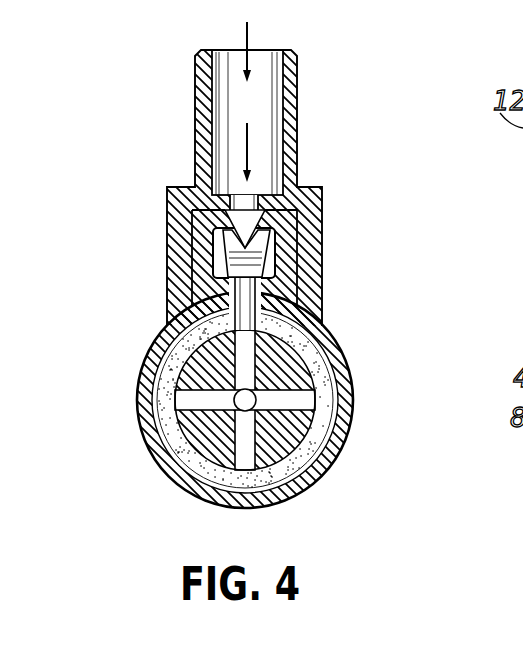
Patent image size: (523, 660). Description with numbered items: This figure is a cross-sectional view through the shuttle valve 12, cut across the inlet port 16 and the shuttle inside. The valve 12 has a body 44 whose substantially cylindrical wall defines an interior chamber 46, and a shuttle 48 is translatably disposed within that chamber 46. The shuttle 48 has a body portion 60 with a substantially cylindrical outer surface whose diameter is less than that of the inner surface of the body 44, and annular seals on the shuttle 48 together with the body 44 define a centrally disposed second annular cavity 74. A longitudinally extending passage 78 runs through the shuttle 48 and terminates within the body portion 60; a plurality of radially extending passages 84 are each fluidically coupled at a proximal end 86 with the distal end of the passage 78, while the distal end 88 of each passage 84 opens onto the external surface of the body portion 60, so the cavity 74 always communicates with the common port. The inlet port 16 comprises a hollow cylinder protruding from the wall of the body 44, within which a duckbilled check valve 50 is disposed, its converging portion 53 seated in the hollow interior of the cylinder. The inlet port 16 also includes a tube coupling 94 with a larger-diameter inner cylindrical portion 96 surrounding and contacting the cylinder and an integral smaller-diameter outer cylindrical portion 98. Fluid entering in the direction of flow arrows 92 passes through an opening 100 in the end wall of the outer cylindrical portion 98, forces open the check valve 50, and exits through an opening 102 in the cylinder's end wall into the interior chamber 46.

The shuttle valve 12 is at (90, 97).
The inlet port 16 is at (188, 125).
The body 44 is at (300, 395).
The interior chamber 46 is at (165, 385).
The shuttle 48 is at (186, 455).
The check valve 50 is at (272, 265).
The converging portion 53 is at (243, 246).
The body portion 60 is at (250, 315).
The second annular cavity 74 is at (197, 333).
The longitudinally extending passage 78 is at (287, 472).
The radially extending passages 84 is at (198, 358).
The proximal end 86 is at (290, 368).
The distal end 88 is at (295, 293).
The flow arrows 92 is at (247, 29).
The tube coupling 94 is at (195, 78).
The inner cylindrical portion 96 is at (322, 203).
The outer cylindrical portion 98 is at (297, 107).
The opening 100 is at (244, 203).
The opening 102 is at (240, 295).